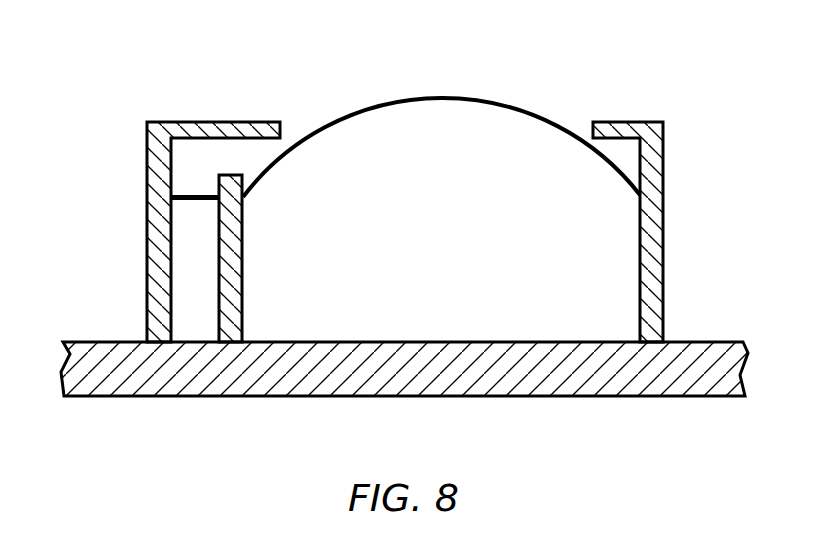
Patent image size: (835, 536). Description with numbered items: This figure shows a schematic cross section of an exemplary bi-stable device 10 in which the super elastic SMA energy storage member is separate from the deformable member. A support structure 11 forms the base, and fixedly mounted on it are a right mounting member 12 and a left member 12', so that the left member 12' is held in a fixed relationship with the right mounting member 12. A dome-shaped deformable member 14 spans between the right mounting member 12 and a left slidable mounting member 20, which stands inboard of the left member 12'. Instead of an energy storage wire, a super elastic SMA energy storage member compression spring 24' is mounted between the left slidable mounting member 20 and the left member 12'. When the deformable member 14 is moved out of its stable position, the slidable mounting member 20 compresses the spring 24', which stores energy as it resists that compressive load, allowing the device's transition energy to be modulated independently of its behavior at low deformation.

The bi-stable device 10 is at (695, 99).
The support structure 11 is at (697, 396).
The right mounting member 12 is at (683, 232).
The left member 12' is at (159, 232).
The deformable member 14 is at (443, 98).
The left slidable mounting member 20 is at (243, 286).
The super elastic SMA energy storage member compression spring 24' is at (143, 239).